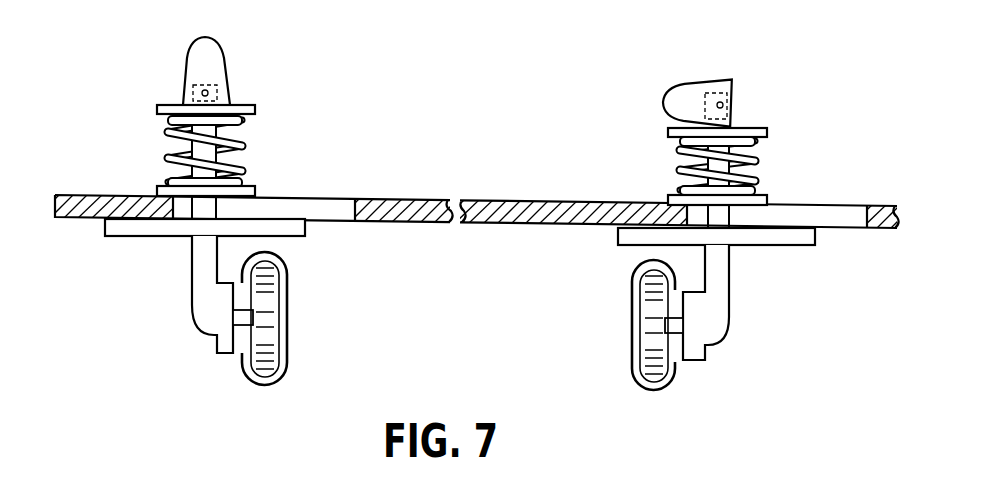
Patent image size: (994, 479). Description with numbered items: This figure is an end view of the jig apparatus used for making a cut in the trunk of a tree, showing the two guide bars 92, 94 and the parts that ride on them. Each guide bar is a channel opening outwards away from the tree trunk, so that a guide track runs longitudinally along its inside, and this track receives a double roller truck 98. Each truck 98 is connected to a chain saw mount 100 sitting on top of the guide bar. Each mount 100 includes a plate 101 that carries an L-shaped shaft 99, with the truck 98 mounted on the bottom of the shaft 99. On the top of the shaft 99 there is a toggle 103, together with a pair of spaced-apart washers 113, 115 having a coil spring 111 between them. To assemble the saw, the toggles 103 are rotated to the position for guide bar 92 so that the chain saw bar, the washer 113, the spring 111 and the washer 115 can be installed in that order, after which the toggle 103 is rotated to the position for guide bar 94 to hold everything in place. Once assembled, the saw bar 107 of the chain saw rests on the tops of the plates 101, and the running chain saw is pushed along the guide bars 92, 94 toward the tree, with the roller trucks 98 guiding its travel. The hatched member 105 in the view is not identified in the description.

The guide bar 92 is at (288, 327).
The guide bar 94 is at (634, 336).
The double roller truck 98 is at (653, 303).
The L-shaped shaft 99 is at (197, 299).
The chain saw mount 100 is at (483, 187).
The plate 101 is at (291, 237).
The toggle 103 is at (211, 53).
The panel 105 is at (475, 172).
The saw bar 107 is at (498, 184).
The coil spring 111 is at (242, 143).
The washer 113 is at (238, 105).
The washer 115 is at (253, 188).